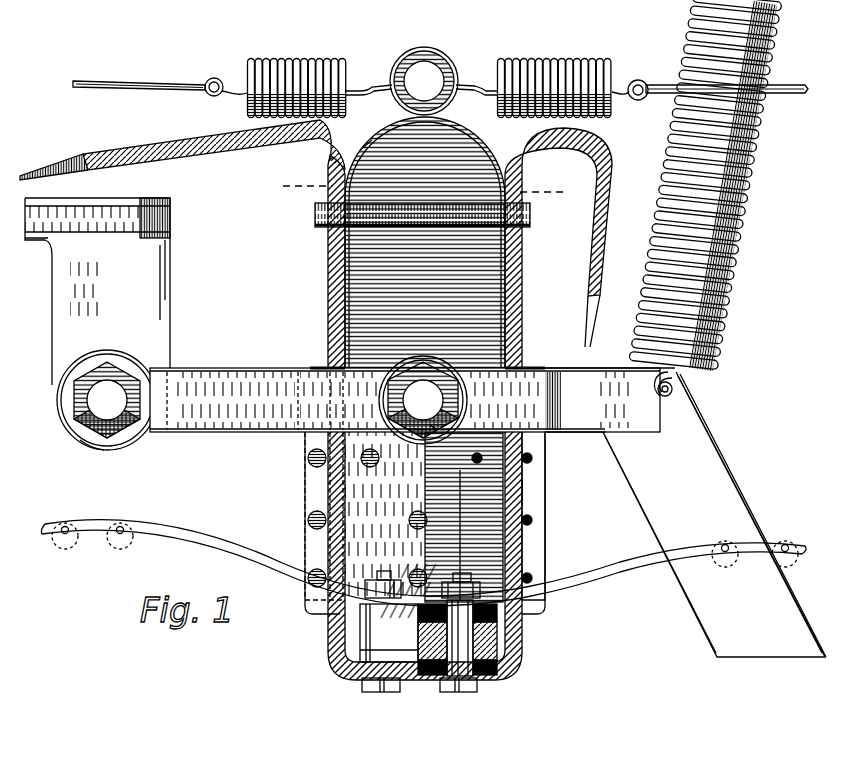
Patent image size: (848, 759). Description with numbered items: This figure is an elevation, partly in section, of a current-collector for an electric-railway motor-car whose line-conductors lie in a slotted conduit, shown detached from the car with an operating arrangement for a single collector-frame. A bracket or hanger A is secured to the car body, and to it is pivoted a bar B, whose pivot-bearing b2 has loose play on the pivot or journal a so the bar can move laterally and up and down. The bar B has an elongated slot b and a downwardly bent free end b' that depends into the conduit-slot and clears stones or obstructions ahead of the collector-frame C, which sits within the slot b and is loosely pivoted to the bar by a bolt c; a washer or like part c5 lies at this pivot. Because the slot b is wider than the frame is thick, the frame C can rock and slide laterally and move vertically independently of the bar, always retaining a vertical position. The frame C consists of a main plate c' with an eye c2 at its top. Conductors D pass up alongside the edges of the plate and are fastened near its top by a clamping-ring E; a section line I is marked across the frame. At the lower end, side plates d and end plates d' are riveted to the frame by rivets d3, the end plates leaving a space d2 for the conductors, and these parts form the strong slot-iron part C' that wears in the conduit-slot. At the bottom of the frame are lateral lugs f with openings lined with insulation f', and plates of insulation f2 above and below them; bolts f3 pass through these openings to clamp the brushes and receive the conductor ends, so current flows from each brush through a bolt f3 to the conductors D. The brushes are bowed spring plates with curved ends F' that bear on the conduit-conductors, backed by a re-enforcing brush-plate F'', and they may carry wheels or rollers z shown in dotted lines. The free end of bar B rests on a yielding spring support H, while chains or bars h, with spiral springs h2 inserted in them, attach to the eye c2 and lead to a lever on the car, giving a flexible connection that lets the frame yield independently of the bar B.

The chain or bar h is at (440, 78).
The spiral spring h2 is at (429, 74).
The eye c2 is at (438, 72).
The collector-frame C is at (425, 359).
The main plate c' is at (442, 152).
The conductor D is at (303, 646).
The clamping-ring E is at (530, 225).
The dashed reference line I is at (421, 189).
The bracket or hanger A is at (97, 291).
The pivot or journal a is at (107, 400).
The pivot-bearing b2 is at (96, 430).
The bar B is at (183, 398).
The bolt c is at (423, 400).
The washer c5 is at (455, 412).
The elongated slot b is at (610, 400).
The bent free end b' is at (600, 514).
The spring support H is at (722, 290).
The curved end F' is at (423, 556).
The wheels or rollers z is at (424, 521).
The re-enforcing brush-plate F'' is at (425, 559).
The slot-iron part C' is at (407, 516).
The rivet d3 is at (308, 460).
The side plate d is at (421, 518).
The end plate d' is at (548, 492).
The lateral lug f is at (389, 633).
The insulation f' is at (447, 638).
The insulation plate f2 is at (405, 620).
The bolt f3 is at (485, 703).
The space d2 is at (518, 616).